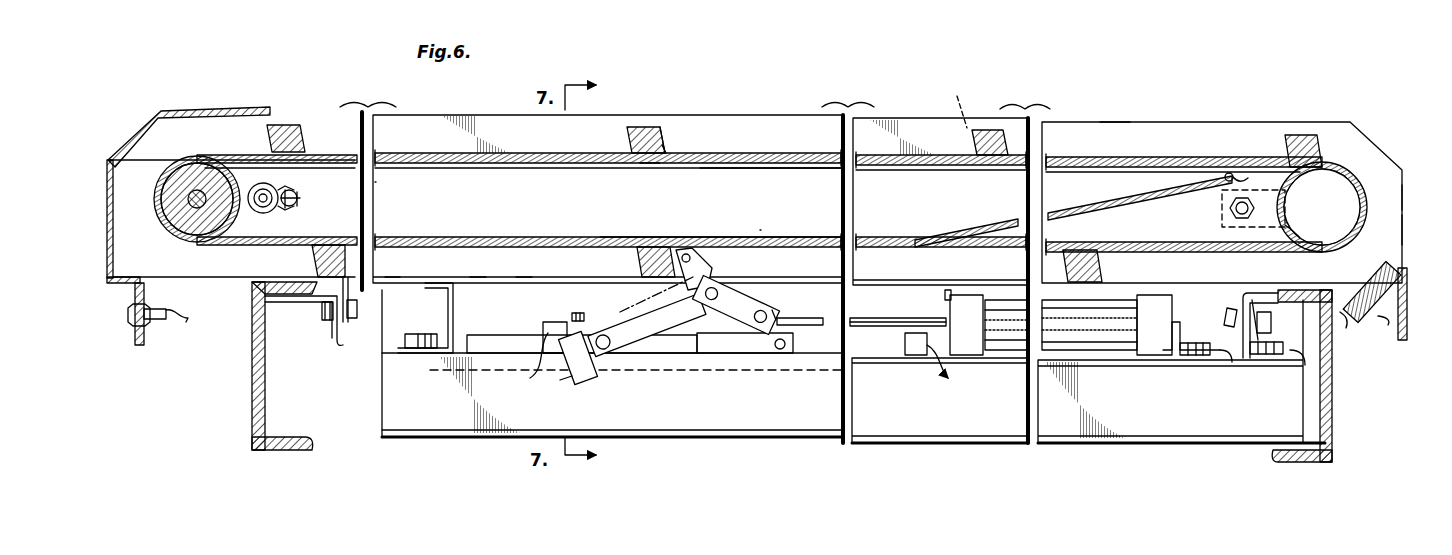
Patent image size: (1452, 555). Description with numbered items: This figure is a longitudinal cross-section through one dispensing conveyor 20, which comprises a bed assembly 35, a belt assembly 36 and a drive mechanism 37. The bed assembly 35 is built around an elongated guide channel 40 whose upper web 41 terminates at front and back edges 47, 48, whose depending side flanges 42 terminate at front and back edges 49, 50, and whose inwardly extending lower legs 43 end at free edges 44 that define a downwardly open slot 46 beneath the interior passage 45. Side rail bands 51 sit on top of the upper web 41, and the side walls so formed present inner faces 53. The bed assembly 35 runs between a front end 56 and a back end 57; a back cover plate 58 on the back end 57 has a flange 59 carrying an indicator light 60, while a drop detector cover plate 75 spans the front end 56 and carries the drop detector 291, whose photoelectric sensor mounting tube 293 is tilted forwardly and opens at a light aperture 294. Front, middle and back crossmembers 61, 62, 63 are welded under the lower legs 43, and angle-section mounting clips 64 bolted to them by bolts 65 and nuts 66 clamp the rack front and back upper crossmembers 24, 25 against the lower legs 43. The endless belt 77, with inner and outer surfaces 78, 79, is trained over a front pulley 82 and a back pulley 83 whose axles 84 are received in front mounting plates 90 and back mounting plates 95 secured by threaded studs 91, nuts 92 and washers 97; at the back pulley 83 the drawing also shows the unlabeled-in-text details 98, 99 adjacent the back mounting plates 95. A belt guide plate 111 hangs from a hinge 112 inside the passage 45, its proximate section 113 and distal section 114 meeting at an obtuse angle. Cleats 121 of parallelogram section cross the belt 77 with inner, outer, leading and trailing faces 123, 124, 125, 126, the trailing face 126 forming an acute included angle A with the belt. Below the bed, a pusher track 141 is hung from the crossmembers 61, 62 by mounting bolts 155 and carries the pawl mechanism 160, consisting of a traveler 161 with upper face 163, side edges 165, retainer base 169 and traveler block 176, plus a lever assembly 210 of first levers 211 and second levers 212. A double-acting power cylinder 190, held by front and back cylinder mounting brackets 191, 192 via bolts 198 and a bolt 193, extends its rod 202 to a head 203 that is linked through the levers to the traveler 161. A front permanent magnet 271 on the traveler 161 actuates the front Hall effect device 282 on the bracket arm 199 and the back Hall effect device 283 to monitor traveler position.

The conveyor 20 is at (107, 283).
The rack front upper crossmember 24 is at (1335, 456).
The rack back upper crossmember 25 is at (252, 440).
The bed assembly 35 is at (106, 160).
The belt assembly 36 is at (175, 236).
The drive mechanism 37 is at (1163, 292).
The guide channel 40 is at (1402, 172).
The upper web 41 is at (564, 170).
The side flanges 42 is at (662, 212).
The lower legs 43 is at (524, 277).
The free edges 44 is at (392, 277).
The interior passage 45 is at (441, 172).
The slot 46 is at (478, 277).
The front edge of upper web 47 is at (1285, 150).
The back edge of upper web 48 is at (240, 154).
The front edge of side flanges 49 is at (1402, 198).
The back edge of side flanges 50 is at (107, 237).
The side rail bands 51 is at (1117, 122).
The inner faces 53 is at (805, 215).
The front end 56 is at (1402, 228).
The back end 57 is at (107, 202).
The back cover plate 58 is at (133, 135).
The back cover plate flange 59 is at (141, 345).
The indicator light 60 is at (127, 318).
The front bed crossmember 61 is at (1237, 292).
The middle bed crossmember 62 is at (445, 313).
The back bed crossmember 63 is at (352, 297).
The mounting clips 64 is at (337, 347).
The bolts 65 is at (357, 310).
The nuts 66 is at (322, 312).
The drop detector cover plate 75 is at (1408, 327).
The endless belt 77 is at (1338, 170).
The inner surface 78 is at (778, 166).
The outer surface 79 is at (766, 160).
The front pulley 82 is at (1285, 230).
The back pulley 83 is at (240, 215).
The axles 84 is at (170, 205).
The front mounting plates 90 is at (1222, 227).
The threaded studs 91 is at (1235, 210).
The nuts 92 is at (1228, 200).
The back mounting plates 95 is at (298, 202).
The washers 97 is at (288, 207).
The roller pin 98 is at (291, 192).
The roller bracket arm 99 is at (283, 188).
The belt guide plate 111 is at (560, 236).
The hinge 112 is at (1226, 170).
The proximate section 113 is at (1092, 205).
The distal section 114 is at (598, 236).
The cleats 121 is at (668, 140).
The inner face 123 is at (648, 168).
The outer face 124 is at (645, 127).
The leading face 125 is at (670, 150).
The trailing face 126 is at (627, 138).
The pusher track 141 is at (380, 430).
The mounting bolts 155 is at (405, 338).
The pawl mechanism 160 is at (562, 319).
The traveler 161 is at (796, 340).
The upper face 163 is at (735, 304).
The side edges 165 is at (676, 354).
The retainer base 169 is at (560, 380).
The traveler block 176 is at (586, 313).
The power cylinder 190 is at (945, 286).
The front cylinder mounting bracket 191 is at (1160, 358).
The back cylinder mounting bracket 192 is at (986, 322).
The bolt 193 is at (1217, 356).
The bolts 198 is at (1185, 335).
The arm 199 is at (934, 318).
The rod 202 is at (883, 318).
The head 203 is at (782, 312).
The lever assembly 210 is at (578, 384).
The first levers 211 is at (735, 290).
The second levers 212 is at (639, 356).
The front permanent magnet 271 is at (774, 345).
The front Hall effect device 282 is at (924, 365).
The back Hall effect device 283 is at (543, 333).
The drop detector 291 is at (1343, 332).
The photoelectric sensor mounting tube 293 is at (1386, 325).
The light aperture 294 is at (1398, 280).
The acute included angle A is at (957, 103).